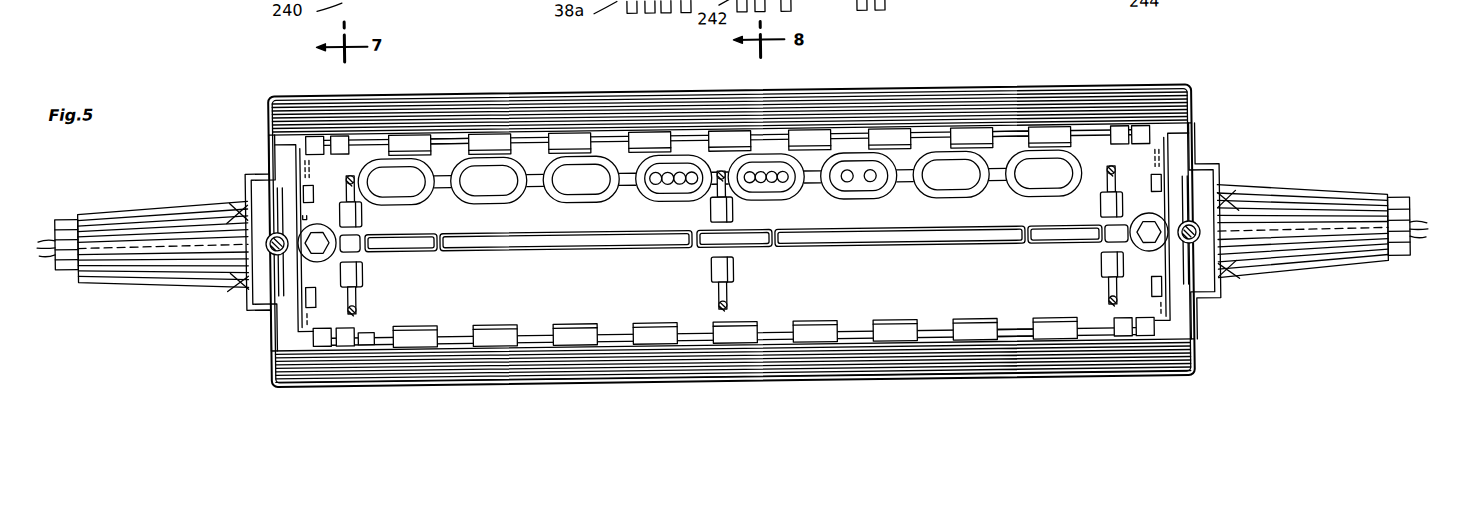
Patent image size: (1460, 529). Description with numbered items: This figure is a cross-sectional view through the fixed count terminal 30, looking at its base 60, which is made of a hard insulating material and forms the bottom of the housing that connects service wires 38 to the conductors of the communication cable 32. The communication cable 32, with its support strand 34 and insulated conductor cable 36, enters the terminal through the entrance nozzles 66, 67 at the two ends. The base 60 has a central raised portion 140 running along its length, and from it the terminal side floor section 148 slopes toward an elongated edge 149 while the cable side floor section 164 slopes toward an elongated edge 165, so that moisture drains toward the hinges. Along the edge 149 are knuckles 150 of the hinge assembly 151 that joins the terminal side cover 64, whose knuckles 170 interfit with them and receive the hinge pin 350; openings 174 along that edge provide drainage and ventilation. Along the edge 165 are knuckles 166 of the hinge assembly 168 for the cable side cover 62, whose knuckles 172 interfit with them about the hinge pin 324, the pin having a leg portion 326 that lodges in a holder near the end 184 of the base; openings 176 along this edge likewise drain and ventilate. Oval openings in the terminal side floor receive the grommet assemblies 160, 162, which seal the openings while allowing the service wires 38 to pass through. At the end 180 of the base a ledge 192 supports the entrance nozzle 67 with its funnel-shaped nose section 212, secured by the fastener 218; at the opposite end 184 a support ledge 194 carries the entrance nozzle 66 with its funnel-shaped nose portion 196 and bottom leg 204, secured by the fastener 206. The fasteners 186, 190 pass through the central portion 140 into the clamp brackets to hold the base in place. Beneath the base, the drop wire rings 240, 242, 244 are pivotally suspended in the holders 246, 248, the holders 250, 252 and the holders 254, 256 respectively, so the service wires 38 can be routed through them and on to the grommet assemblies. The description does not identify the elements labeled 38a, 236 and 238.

The fixed count terminal 30 is at (1300, 99).
The communication cable 32 is at (64, 207).
The support strand 34 is at (1422, 251).
The insulated conductor cable 36 is at (1402, 209).
The service wires 38 is at (764, 168).
The contact openings 38a is at (654, 169).
The base 60 is at (1198, 314).
The cable side cover 62 is at (700, 382).
The terminal side cover 64 is at (742, 92).
The entrance nozzle 66 is at (160, 197).
The entrance nozzle 67 is at (1303, 194).
The central raised portion 140 is at (638, 239).
The terminal side floor section 148 is at (627, 159).
The elongated edge 149 is at (1092, 120).
The knuckles 150 is at (1047, 147).
The hinge assembly 151 is at (990, 112).
The grommet assembly 160 is at (853, 157).
The grommet assembly 162 is at (459, 146).
The cable side floor section 164 is at (625, 297).
The elongated edge 165 is at (1053, 327).
The knuckles 166 is at (1024, 349).
The hinge assembly 168 is at (998, 356).
The knuckles 170 is at (967, 126).
The knuckles 172 is at (972, 351).
The openings 174 is at (508, 134).
The openings 176 is at (435, 343).
The end of the base 180 is at (1171, 150).
The end of the base 184 is at (310, 226).
The fastener 186 is at (1150, 222).
The fastener 190 is at (296, 164).
The ledge 192 is at (1207, 289).
The support ledge 194 is at (263, 291).
The funnel-shaped nose portion 196 is at (168, 266).
The bottom leg 204 is at (247, 208).
The fastener 206 is at (265, 234).
The funnel-shaped nose section 212 is at (1313, 270).
The fastener 218 is at (1203, 233).
The conductors 236 is at (76, 250).
The conductors 238 is at (1397, 267).
The drop wire ring 240 is at (357, 295).
The drop wire ring 242 is at (733, 296).
The drop wire ring 244 is at (1106, 292).
The holder 246 is at (363, 265).
The holder 248 is at (363, 212).
The holder 250 is at (735, 268).
The holder 252 is at (734, 212).
The holder 254 is at (1102, 270).
The holder 256 is at (1102, 210).
The hinge pin 324 is at (1008, 341).
The leg portion 326 is at (303, 286).
The hinge pin 350 is at (1016, 126).